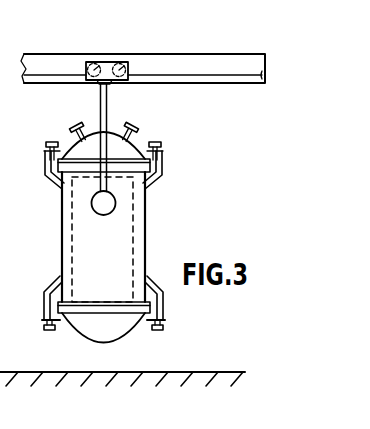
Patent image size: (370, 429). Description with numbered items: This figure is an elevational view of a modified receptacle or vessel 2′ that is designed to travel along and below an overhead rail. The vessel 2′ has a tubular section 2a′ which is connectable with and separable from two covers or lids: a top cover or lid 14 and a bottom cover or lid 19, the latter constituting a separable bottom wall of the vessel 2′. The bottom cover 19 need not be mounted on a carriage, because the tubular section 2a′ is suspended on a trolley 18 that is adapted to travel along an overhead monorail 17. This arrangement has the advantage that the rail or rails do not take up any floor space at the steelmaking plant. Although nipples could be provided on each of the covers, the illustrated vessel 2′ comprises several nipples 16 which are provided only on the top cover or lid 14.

The top cover or lid 14 is at (78, 150).
The nipples 16 is at (134, 126).
The overhead monorail 17 is at (236, 71).
The trolley 18 is at (91, 82).
The bottom cover or lid 19 is at (122, 328).
The receptacle or vessel 2′ is at (145, 232).
The tubular section 2a′ is at (143, 203).